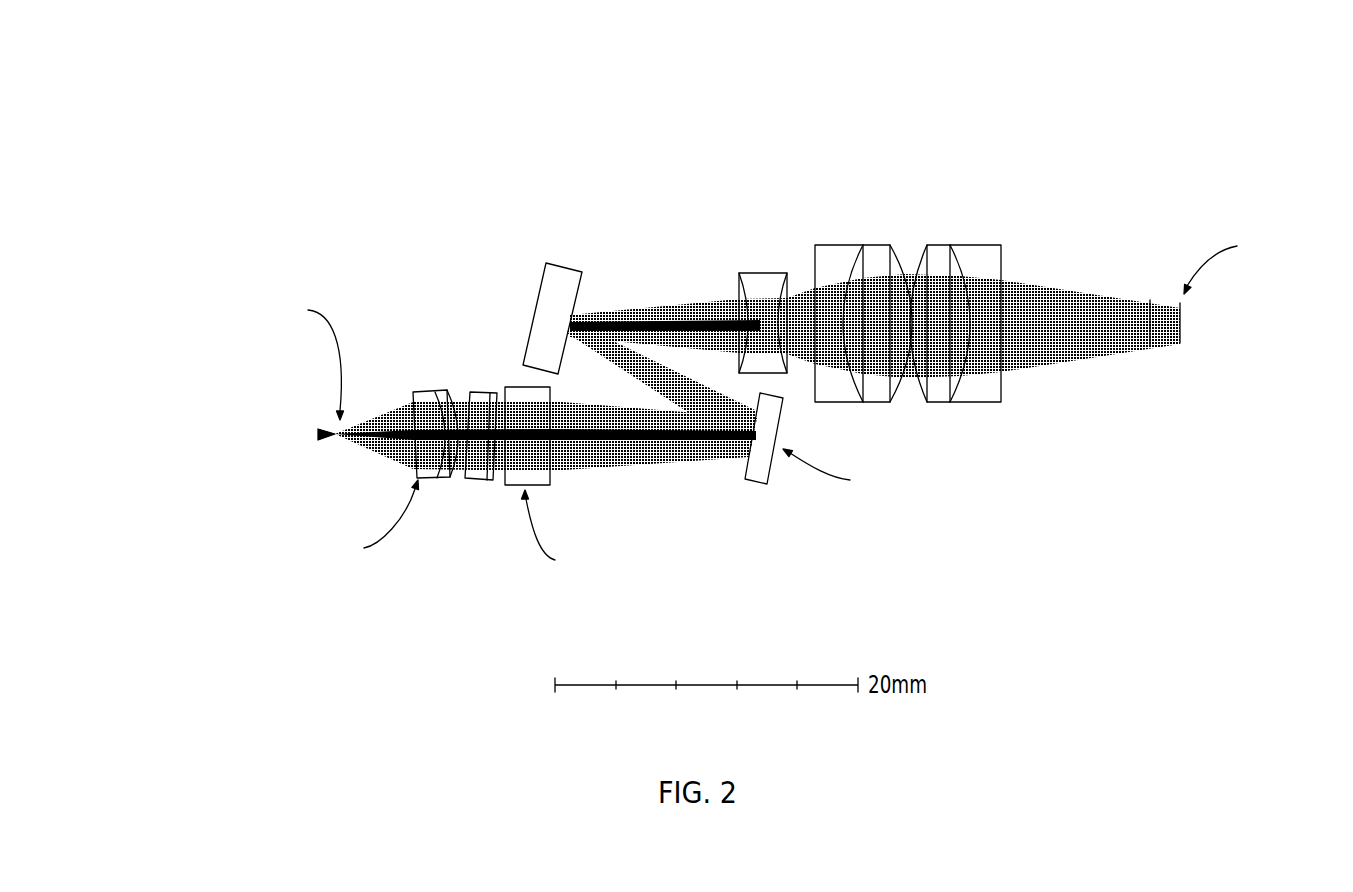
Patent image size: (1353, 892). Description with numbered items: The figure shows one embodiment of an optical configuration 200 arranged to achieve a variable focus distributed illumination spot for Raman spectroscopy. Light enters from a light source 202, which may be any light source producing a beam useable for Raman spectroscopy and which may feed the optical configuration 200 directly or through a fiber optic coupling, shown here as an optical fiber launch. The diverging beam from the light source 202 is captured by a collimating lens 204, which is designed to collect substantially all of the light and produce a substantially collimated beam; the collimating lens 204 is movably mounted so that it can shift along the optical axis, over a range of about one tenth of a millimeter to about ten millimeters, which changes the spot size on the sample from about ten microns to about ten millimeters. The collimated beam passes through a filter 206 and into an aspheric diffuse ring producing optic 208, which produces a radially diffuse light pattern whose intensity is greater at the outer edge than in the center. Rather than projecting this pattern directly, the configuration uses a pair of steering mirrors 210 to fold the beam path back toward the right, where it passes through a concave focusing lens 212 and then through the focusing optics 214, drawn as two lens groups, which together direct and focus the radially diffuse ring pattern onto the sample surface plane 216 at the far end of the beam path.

The optical configuration 200 is at (1181, 107).
The light source 202 is at (333, 424).
The collimating lens 204 is at (413, 472).
The filter 206 is at (480, 483).
The aspheric diffuse ring producing optic 208 is at (552, 482).
The steering mirror 210 is at (543, 272).
The concave focusing lens 212 is at (758, 272).
The focusing optics 214 is at (878, 396).
The sample surface plane 216 is at (1181, 330).